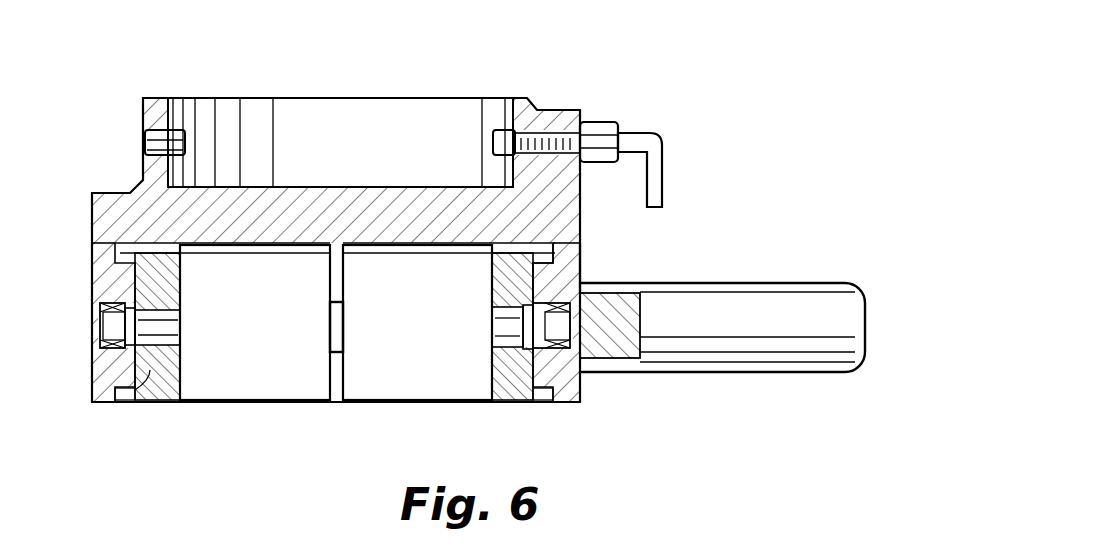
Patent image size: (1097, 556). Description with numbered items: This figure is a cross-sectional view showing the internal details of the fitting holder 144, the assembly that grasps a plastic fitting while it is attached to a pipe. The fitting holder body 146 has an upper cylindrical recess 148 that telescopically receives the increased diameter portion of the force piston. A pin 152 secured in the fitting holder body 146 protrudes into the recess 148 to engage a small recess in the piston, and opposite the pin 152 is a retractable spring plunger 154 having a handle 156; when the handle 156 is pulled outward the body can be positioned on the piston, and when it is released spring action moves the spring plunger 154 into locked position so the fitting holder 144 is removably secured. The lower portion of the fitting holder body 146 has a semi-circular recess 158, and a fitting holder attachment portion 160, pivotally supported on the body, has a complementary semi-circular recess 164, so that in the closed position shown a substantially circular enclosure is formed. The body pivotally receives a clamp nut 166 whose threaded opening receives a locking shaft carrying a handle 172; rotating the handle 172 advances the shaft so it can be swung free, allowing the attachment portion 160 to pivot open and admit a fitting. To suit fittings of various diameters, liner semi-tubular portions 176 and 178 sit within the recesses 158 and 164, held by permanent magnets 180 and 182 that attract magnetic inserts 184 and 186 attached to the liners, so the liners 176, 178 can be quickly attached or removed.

The fitting holder 144 is at (397, 90).
The fitting holder body 146 is at (118, 220).
The upper cylindrical recess 148 is at (168, 113).
The pin 152 is at (162, 140).
The retractable spring plunger 154 is at (533, 105).
The handle 156 is at (652, 183).
The semi-circular recess 158 is at (150, 402).
The fitting holder attachment portion 160 is at (583, 381).
The semi-circular recess 164 is at (532, 373).
The clamp nut 166 is at (335, 340).
The handle 172 is at (731, 322).
The liner semi-tubular portion 176 is at (162, 290).
The liner semi-tubular portion 178 is at (517, 289).
The permanent magnet 180 is at (100, 338).
The permanent magnet 182 is at (575, 298).
The magnetic insert 184 is at (142, 325).
The magnetic insert 186 is at (523, 325).